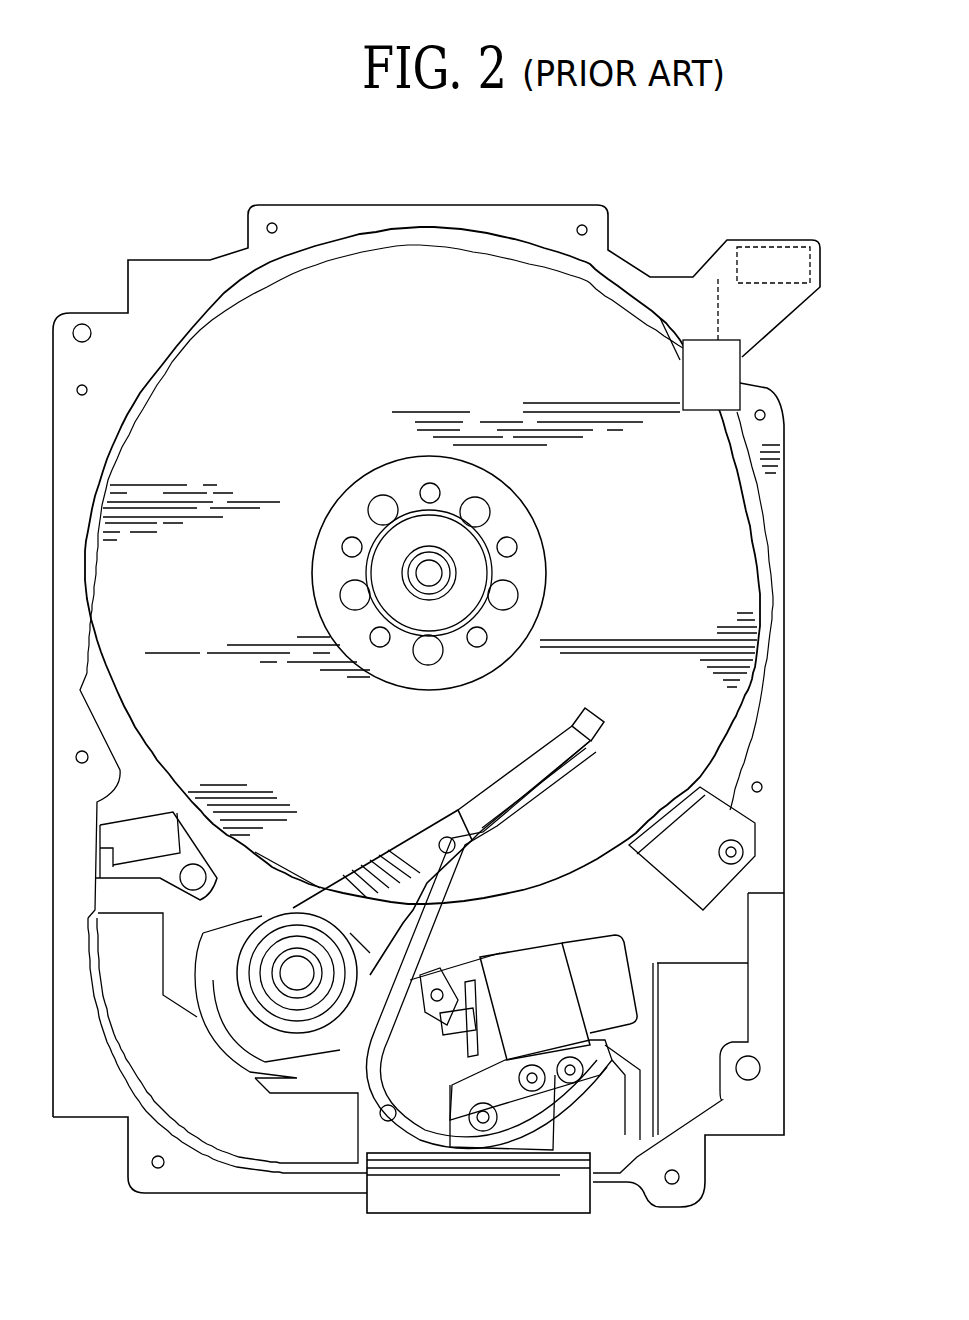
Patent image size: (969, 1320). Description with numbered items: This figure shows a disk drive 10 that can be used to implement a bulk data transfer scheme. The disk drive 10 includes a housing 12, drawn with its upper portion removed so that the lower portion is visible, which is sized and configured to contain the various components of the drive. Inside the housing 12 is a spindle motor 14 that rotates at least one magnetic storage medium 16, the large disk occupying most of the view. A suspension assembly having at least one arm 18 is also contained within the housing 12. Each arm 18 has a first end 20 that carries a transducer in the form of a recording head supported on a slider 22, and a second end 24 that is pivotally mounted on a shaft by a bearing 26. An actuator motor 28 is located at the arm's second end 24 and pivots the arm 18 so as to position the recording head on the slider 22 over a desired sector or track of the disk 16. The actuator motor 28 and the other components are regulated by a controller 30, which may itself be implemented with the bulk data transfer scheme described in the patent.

The disk drive 10 is at (108, 240).
The housing 12 is at (560, 215).
The spindle motor 14 is at (418, 574).
The magnetic storage medium 16 is at (344, 373).
The arm 18 is at (412, 842).
The first end 20 is at (528, 752).
The slider 22 is at (600, 712).
The second end 24 is at (321, 915).
The bearing 26 is at (290, 957).
The actuator motor 28 is at (405, 1033).
The controller 30 is at (729, 392).